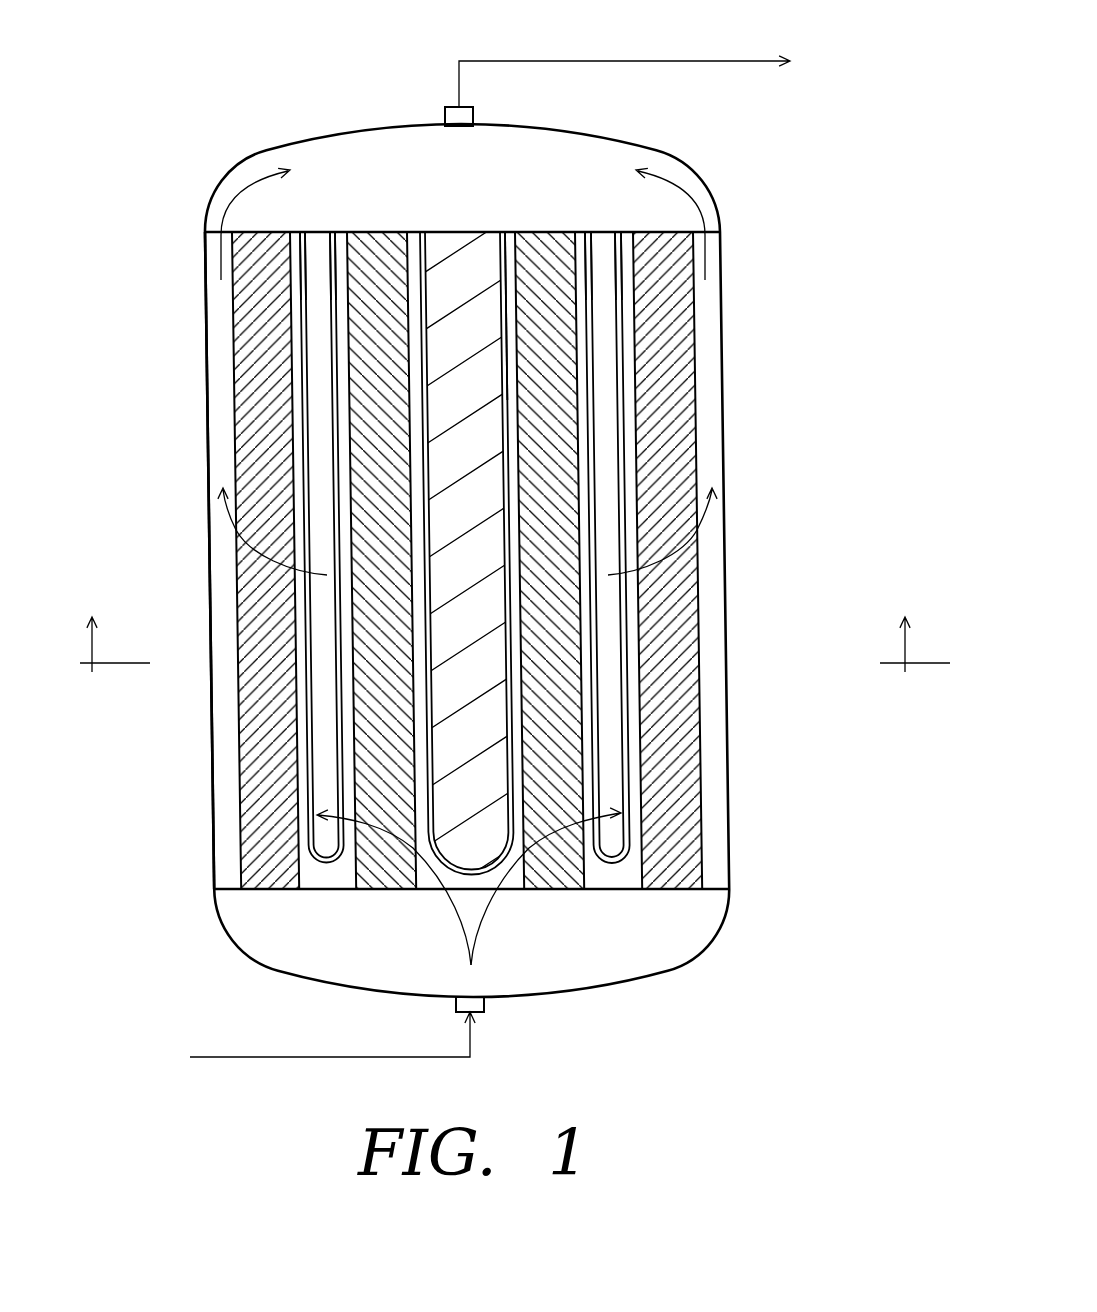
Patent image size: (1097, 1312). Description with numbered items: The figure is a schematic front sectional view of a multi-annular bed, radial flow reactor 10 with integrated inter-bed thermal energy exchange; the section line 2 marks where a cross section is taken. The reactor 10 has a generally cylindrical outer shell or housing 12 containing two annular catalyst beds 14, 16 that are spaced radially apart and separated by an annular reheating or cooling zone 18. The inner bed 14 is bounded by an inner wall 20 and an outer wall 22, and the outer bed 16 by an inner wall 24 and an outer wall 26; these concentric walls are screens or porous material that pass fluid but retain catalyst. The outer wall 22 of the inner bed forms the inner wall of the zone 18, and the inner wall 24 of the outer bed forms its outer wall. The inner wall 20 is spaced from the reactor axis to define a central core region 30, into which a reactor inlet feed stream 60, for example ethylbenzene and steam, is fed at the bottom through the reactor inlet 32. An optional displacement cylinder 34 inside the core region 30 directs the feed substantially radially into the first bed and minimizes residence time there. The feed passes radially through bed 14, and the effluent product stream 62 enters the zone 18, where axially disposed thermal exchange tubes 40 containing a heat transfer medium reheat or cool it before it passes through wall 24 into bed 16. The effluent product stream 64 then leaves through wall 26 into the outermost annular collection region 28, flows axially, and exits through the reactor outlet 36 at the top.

The radial flow reactor 10 is at (428, 539).
The outer shell or housing 12 is at (207, 388).
The inner catalyst bed 14 is at (553, 403).
The outer catalyst bed 16 is at (663, 646).
The reheating or cooling zone 18 is at (458, 600).
The inner wall of inner bed 20 is at (605, 565).
The outer wall of inner bed 22 is at (594, 876).
The inner wall of outer bed 24 is at (332, 885).
The outer wall of outer bed 26 is at (237, 778).
The annular collection region 28 is at (226, 708).
The inner cylindrical core region 30 is at (508, 242).
The reactor inlet 32 is at (456, 1006).
The fluid displacement means 34 is at (468, 690).
The reactor outlet 36 is at (474, 112).
The thermal exchange tubes 40 is at (333, 299).
The reactor inlet feed stream 60 is at (313, 1057).
The effluent product stream from inner bed 62 is at (327, 575).
The effluent product stream 64 is at (590, 60).
The section line 2- 2 is at (515, 633).